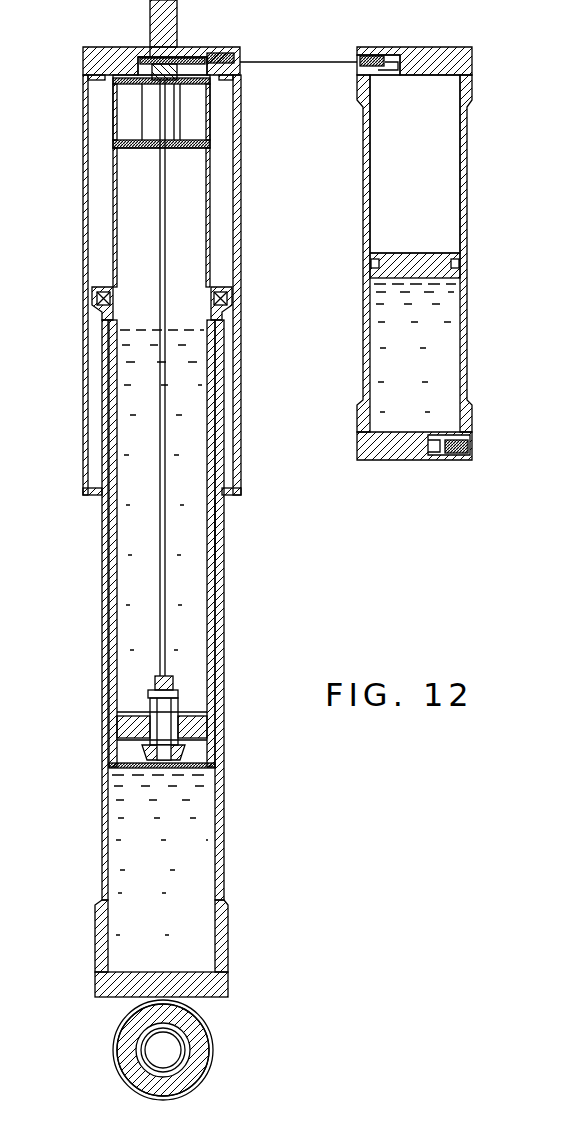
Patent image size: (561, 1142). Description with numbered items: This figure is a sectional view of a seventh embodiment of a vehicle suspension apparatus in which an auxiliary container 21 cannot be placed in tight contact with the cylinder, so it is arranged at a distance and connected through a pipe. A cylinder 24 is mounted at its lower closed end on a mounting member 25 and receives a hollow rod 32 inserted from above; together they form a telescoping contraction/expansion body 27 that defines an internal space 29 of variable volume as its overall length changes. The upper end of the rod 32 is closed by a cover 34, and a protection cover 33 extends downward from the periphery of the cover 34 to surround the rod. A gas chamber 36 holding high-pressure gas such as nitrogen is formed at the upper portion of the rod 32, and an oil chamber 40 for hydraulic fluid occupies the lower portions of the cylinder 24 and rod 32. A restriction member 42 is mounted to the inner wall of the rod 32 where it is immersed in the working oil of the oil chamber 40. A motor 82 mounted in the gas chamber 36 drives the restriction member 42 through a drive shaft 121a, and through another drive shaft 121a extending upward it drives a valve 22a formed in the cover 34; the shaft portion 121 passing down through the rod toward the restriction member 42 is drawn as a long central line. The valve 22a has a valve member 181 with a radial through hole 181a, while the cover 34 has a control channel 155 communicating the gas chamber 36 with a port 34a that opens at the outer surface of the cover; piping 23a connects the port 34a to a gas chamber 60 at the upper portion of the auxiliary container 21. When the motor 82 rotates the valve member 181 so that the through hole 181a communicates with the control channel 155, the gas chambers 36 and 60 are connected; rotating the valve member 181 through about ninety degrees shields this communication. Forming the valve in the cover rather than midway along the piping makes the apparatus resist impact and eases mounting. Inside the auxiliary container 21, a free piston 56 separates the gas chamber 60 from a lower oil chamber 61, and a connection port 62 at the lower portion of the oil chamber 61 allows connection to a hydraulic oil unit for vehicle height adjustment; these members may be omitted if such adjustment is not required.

The control channel 155 is at (192, 62).
The valve 22a is at (146, 46).
The cover 34 is at (100, 63).
The radial through hole 181a is at (183, 62).
The drive shaft 121a is at (178, 98).
The port 34a is at (240, 64).
The piping 23a is at (303, 60).
The valve member 181 is at (130, 90).
The motor 82 is at (180, 130).
The gas chamber 36 is at (130, 185).
The protection cover 33 is at (84, 238).
The piston rod 121 is at (165, 202).
The cylinder 24 is at (105, 630).
The contraction/expansion body 27 is at (225, 579).
The hollow rod 32 is at (112, 660).
The internal space 29 is at (130, 572).
The oil chamber 40 is at (195, 620).
The restriction member 42 is at (138, 705).
The mounting member 25 is at (128, 1055).
The auxiliary container 21 is at (472, 194).
The gas chamber 60 is at (450, 158).
The free piston 56 is at (412, 255).
The oil chamber 61 is at (450, 365).
The connection port 62 is at (468, 443).